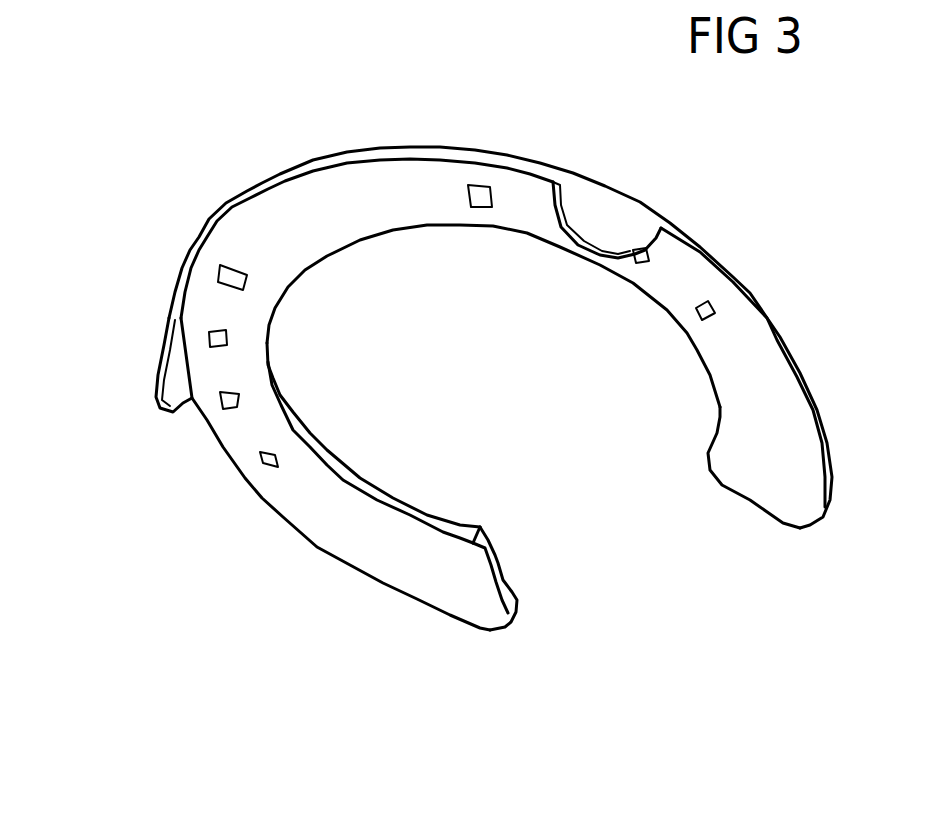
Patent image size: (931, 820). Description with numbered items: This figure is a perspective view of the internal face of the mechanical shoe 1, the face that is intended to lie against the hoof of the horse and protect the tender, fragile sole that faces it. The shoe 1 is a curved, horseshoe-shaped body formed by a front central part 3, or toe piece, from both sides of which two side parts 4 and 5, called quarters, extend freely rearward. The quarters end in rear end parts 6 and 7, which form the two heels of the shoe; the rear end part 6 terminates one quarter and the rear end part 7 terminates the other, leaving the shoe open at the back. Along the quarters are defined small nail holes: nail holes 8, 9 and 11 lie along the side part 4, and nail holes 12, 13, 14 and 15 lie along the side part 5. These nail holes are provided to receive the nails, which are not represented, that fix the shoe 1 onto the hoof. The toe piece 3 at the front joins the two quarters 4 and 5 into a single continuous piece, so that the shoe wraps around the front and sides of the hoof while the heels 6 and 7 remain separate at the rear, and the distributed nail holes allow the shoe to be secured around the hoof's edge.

The mechanical shoe 1 is at (348, 0).
The front central part 3 is at (238, 178).
The side part 4 is at (696, 207).
The side part 5 is at (330, 607).
The rear end part 6 is at (743, 457).
The rear end part 7 is at (483, 580).
The nail hole 8 is at (718, 305).
The nail hole 9 is at (650, 256).
The nail hole 11 is at (496, 185).
The nail hole 12 is at (267, 480).
The nail hole 13 is at (224, 412).
The nail hole 14 is at (210, 342).
The nail hole 15 is at (220, 270).